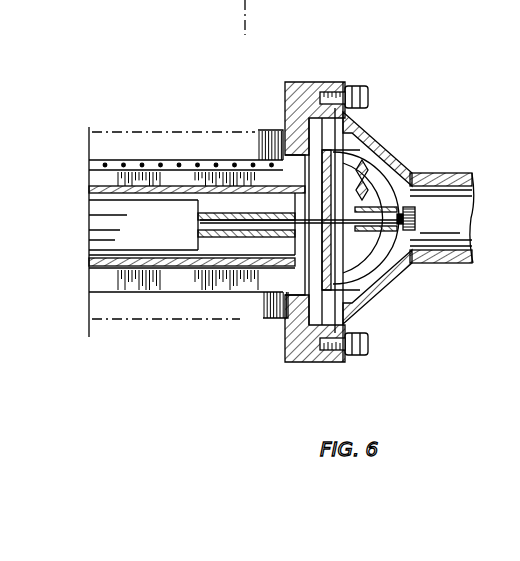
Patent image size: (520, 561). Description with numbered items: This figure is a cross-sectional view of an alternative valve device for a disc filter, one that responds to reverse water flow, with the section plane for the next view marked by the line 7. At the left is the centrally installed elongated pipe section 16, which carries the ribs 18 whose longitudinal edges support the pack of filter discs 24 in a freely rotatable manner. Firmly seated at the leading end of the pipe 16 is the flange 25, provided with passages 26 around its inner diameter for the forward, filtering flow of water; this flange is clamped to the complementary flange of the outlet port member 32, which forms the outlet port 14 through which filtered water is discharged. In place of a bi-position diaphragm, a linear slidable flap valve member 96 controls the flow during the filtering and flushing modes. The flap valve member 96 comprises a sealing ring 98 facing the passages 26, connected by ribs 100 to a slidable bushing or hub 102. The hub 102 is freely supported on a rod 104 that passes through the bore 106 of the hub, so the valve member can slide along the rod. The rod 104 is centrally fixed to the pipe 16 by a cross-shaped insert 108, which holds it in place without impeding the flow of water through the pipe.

The section line 7- 7 is at (257, 412).
The outlet port 14 is at (458, 220).
The elongated pipe section 16 is at (92, 205).
The ribs 18 is at (88, 178).
The filter discs 24 is at (288, 172).
The flange 25 is at (300, 84).
The passages 26 is at (282, 172).
The outlet port member 32 is at (368, 125).
The flap valve member 96 is at (398, 138).
The sealing ring 98 is at (289, 327).
The ribs 100 is at (385, 287).
The slidable bushing or hub 102 is at (363, 263).
The rod 104 is at (198, 230).
The bore 106 is at (400, 206).
The cross-shaped insert 108 is at (198, 203).